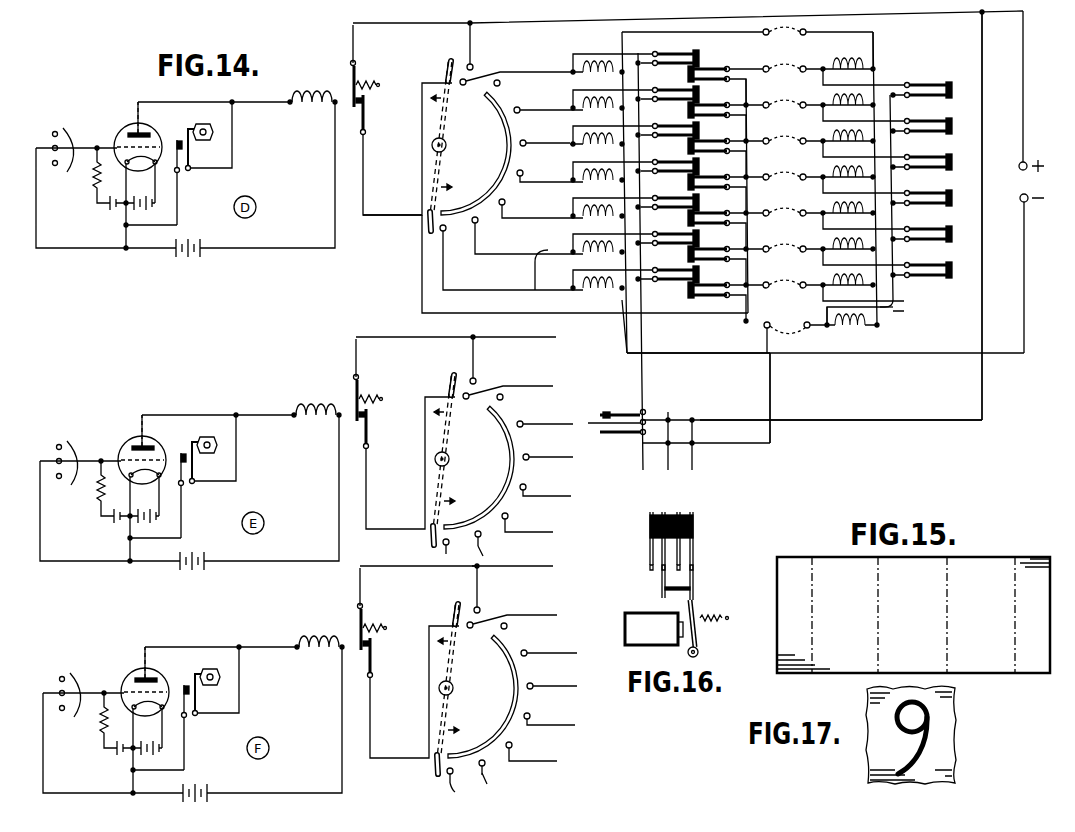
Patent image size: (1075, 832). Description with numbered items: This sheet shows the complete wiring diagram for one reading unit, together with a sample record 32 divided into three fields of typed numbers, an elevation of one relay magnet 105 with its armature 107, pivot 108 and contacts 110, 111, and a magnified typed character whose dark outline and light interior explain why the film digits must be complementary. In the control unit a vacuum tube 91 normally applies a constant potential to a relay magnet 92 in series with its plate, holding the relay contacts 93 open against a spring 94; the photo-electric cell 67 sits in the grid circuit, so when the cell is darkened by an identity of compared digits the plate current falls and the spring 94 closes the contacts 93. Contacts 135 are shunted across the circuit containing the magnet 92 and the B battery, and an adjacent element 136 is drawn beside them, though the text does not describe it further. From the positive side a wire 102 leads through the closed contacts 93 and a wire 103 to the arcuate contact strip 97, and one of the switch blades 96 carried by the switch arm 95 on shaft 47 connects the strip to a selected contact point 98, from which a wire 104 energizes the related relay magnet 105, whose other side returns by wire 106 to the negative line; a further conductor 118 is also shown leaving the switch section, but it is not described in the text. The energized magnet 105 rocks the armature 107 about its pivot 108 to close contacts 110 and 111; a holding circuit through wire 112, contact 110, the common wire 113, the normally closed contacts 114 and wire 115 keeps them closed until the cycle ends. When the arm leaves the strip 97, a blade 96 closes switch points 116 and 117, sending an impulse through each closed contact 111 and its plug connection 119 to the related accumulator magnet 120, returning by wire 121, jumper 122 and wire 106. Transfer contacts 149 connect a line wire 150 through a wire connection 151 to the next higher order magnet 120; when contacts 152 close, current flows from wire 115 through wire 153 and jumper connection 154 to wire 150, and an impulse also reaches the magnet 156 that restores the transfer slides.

In FIG. 15, the record 32 is at (838, 662).
In FIG. 17, the record 32 is at (957, 745).
In FIG. 14, the shaft 47 is at (447, 143).
In FIG. 14, the photo-electric cell 67 is at (63, 128).
In FIG. 14, the vacuum tube 91 is at (121, 129).
In FIG. 14, the magnet 92 is at (311, 115).
In FIG. 14, the contacts 93 is at (353, 98).
In FIG. 14, the spring 94 is at (378, 83).
In FIG. 14, the switch arm 95 is at (437, 157).
In FIG. 14, the switch blades 96 is at (450, 58).
In FIG. 14, the contact strip 97 is at (506, 160).
In FIG. 14, the contact points 98 is at (501, 85).
In FIG. 14, the wire 102 is at (533, 22).
In FIG. 14, the wire 103 is at (391, 213).
In FIG. 14, the wire 104 is at (550, 264).
In FIG. 14, the relay magnet 105 is at (595, 298).
In FIG. 16, the relay magnet 105 is at (642, 618).
In FIG. 14, the wire 106 is at (673, 355).
In FIG. 16, the armature 107 is at (698, 635).
In FIG. 16, the pivot 108 is at (699, 654).
In FIG. 14, the contacts 110 is at (687, 202).
In FIG. 16, the contacts 110 is at (692, 568).
In FIG. 14, the contacts 111 is at (702, 220).
In FIG. 16, the contacts 111 is at (655, 574).
In FIG. 14, the wire 112 is at (571, 189).
In FIG. 14, the wire 113 is at (643, 333).
In FIG. 14, the contacts 114 is at (598, 414).
In FIG. 14, the wire 115 is at (785, 421).
In FIG. 14, the switch point 116 is at (474, 65).
In FIG. 14, the switch point 117 is at (467, 81).
In FIG. 14, the conductor 118 is at (422, 264).
In FIG. 14, the plug connection 119 is at (775, 201).
In FIG. 14, the accumulator magnet 120 is at (850, 205).
In FIG. 14, the wire 121 is at (877, 47).
In FIG. 14, the jumper 122 is at (790, 33).
In FIG. 14, the contacts 135 is at (177, 140).
In FIG. 14, the relay 136 is at (205, 141).
In FIG. 14, the transfer contacts 149 is at (951, 273).
In FIG. 14, the line wire 150 is at (893, 303).
In FIG. 14, the wire connection 151 is at (866, 228).
In FIG. 14, the contacts 152 is at (612, 434).
In FIG. 14, the wire 153 is at (772, 388).
In FIG. 14, the jumper connection 154 is at (799, 337).
In FIG. 14, the magnet 156 is at (867, 328).
In FIG. 14, the B battery B is at (184, 258).